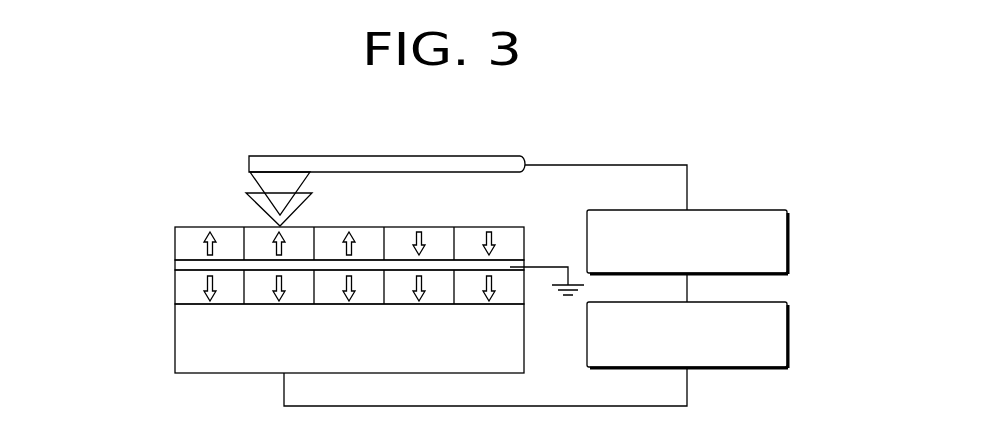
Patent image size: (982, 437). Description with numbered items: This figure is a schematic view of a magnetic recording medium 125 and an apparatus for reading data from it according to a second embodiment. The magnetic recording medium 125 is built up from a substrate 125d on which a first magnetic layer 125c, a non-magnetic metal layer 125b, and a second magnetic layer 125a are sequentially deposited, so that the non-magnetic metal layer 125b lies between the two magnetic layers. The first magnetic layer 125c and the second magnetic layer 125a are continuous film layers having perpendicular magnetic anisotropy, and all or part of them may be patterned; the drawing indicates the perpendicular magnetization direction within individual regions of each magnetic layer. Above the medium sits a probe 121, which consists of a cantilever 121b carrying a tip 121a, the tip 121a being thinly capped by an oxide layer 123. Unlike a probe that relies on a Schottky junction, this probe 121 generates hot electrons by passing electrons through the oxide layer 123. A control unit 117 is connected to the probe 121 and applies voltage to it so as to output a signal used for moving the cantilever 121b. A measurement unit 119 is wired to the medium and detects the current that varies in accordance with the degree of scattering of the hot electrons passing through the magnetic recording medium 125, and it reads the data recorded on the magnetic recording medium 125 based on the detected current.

The probe 121 is at (232, 168).
The tip 121a is at (290, 186).
The cantilever 121b is at (330, 162).
The oxide layer 123 is at (257, 199).
The magnetic recording medium 125 is at (75, 223).
The second magnetic layer 125a is at (175, 242).
The non-magnetic metal layer 125b is at (175, 263).
The first magnetic layer 125c is at (175, 288).
The substrate 125d is at (175, 318).
The control unit 117 is at (787, 240).
The measurement unit 119 is at (787, 333).